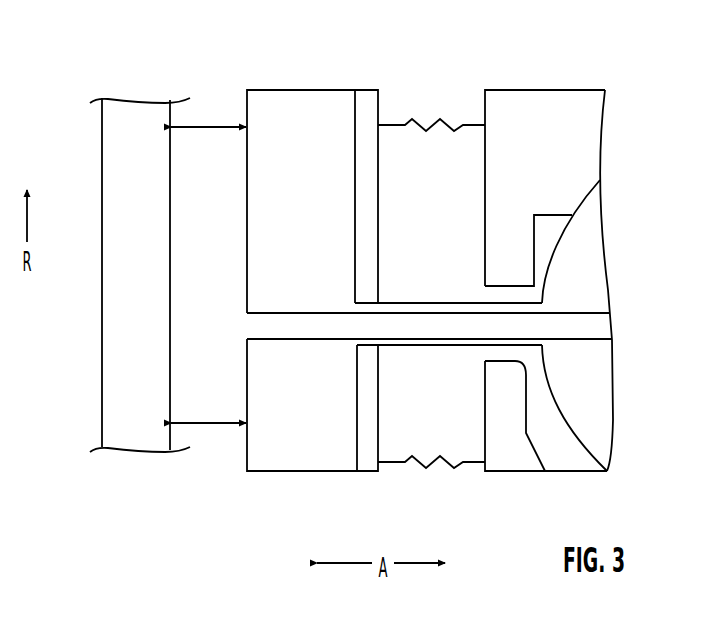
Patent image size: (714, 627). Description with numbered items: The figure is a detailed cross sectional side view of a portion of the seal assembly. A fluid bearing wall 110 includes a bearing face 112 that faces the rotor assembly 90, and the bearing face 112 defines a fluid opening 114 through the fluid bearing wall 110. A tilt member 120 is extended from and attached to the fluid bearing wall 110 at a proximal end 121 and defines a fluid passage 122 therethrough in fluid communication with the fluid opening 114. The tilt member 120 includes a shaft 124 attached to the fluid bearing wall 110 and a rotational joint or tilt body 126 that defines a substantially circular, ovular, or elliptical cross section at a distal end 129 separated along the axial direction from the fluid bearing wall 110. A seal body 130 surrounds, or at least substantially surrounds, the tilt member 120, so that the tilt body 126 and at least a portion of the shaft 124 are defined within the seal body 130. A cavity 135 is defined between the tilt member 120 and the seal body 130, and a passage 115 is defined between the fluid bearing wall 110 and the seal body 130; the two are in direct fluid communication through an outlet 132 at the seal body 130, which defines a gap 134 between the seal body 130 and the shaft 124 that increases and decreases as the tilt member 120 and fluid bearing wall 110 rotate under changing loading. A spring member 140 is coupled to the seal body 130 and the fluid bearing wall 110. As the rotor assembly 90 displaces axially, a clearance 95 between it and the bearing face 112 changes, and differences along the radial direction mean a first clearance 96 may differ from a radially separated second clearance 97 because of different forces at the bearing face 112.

The rotor assembly 90 is at (102, 352).
The clearance 95 is at (181, 228).
The first clearance 96 is at (205, 122).
The second clearance 97 is at (205, 428).
The fluid bearing wall 110 is at (291, 100).
The bearing face 112 is at (244, 217).
The fluid opening 114 is at (244, 337).
The passage 115 is at (404, 185).
The tilt member 120 is at (592, 190).
The proximal end 121 is at (231, 291).
The fluid passage 122 is at (433, 326).
The shaft 124 is at (387, 310).
The tilt body 126 is at (587, 391).
The distal end 129 is at (611, 291).
The seal body 130 is at (535, 108).
The outlet 132 is at (482, 290).
The gap 134 is at (453, 328).
The cavity 135 is at (485, 352).
The spring member 140 is at (470, 120).